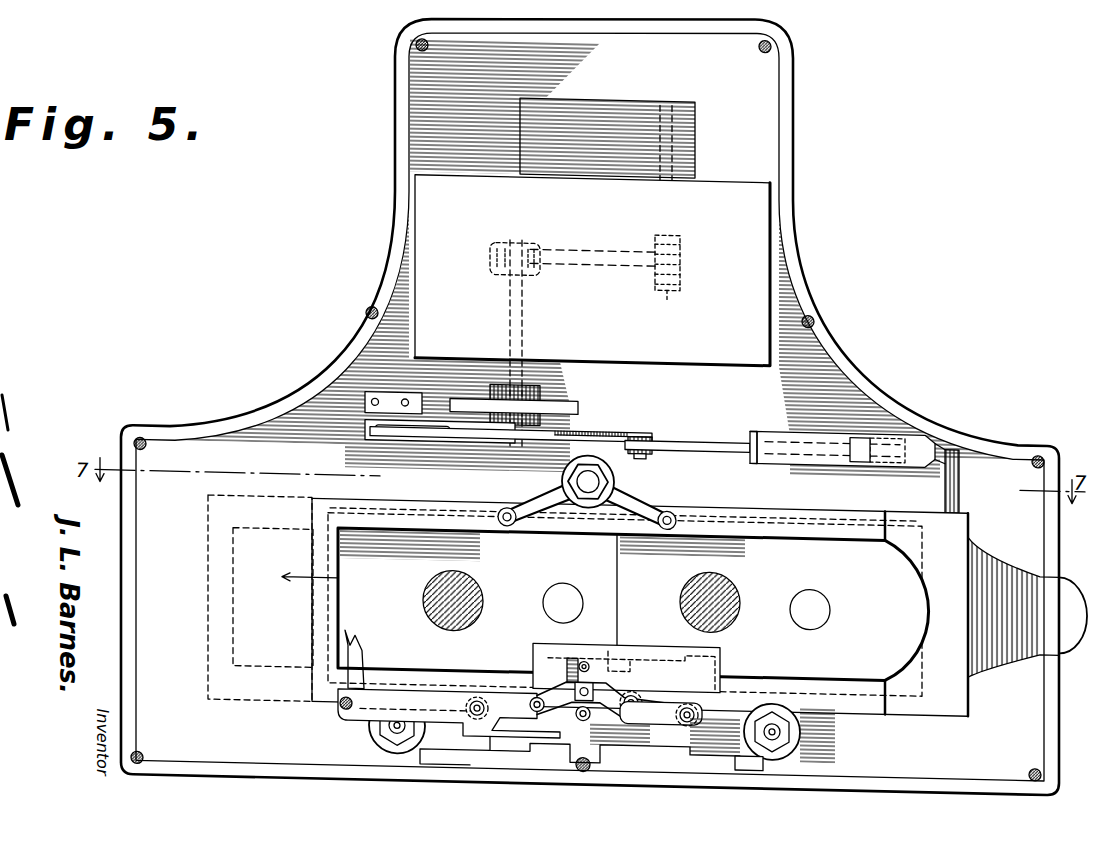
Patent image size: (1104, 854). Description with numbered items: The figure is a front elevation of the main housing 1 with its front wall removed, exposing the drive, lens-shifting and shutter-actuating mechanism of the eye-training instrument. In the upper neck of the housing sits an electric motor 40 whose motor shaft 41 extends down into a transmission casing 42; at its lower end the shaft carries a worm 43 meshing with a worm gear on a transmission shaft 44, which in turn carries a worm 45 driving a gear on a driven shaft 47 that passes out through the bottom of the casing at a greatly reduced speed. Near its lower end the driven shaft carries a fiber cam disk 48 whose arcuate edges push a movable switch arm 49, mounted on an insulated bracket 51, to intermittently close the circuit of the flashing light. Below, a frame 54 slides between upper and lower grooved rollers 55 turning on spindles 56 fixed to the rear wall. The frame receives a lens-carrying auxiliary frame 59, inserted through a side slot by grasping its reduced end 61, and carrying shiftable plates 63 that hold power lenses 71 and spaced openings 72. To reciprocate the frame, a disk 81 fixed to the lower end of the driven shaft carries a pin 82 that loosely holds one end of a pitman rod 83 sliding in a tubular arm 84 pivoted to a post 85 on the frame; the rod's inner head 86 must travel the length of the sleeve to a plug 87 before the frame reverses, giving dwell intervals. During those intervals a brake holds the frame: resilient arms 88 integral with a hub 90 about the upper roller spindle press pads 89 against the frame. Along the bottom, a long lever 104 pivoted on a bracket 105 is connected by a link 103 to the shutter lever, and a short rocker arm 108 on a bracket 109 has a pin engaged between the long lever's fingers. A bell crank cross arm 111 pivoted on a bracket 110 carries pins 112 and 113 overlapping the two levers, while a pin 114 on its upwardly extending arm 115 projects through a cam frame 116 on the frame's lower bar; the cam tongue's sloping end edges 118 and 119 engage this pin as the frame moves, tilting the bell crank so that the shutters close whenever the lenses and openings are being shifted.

The housing 1 is at (848, 348).
The electric motor 40 is at (697, 157).
The motor shaft 41 is at (680, 192).
The transmission casing 42 is at (760, 226).
The worm 43 is at (665, 280).
The transmission shaft 44 is at (605, 238).
The worm 45 is at (495, 264).
The driven shaft 47 is at (525, 321).
The cam disk 48 is at (578, 395).
The movable arm 49 is at (430, 394).
The bracket 51 is at (366, 407).
The frame 54 is at (762, 498).
The grooved rollers 55 is at (568, 462).
The spindles 56 is at (577, 473).
The auxiliary frame 59 is at (975, 528).
The reduced end 61 is at (1072, 559).
The plates 63 is at (455, 528).
The power lenses 71 is at (425, 584).
The openings 72 is at (545, 589).
The disk 81 is at (612, 417).
The pin 82 is at (647, 424).
The pitman rod 83 is at (696, 430).
The tubular arm 84 is at (800, 421).
The post 85 is at (851, 421).
The head 86 is at (902, 420).
The plug 87 is at (757, 418).
The resilient arms 88 is at (525, 492).
The pads 89 is at (670, 502).
The hub 90 is at (580, 460).
The link 103 is at (367, 655).
The lever 104 is at (436, 684).
The bracket 105 is at (478, 742).
The rocker arm 108 is at (662, 714).
The bracket 109 is at (732, 756).
The bracket 110 is at (592, 761).
The cross arm 111 is at (570, 704).
The pin 112 is at (534, 688).
The pin 113 is at (640, 688).
The pin 114 is at (582, 650).
The upwardly extending arm 115 is at (598, 672).
The cam frame 116 is at (545, 645).
The sloping end edge 118 is at (614, 646).
The sloping end edge 119 is at (680, 647).